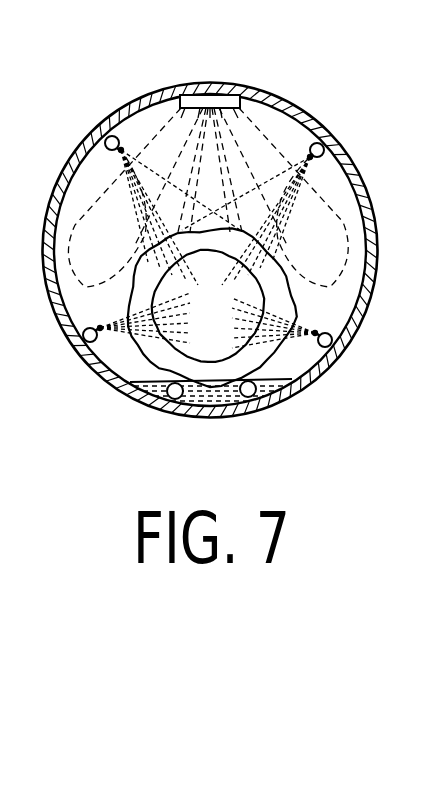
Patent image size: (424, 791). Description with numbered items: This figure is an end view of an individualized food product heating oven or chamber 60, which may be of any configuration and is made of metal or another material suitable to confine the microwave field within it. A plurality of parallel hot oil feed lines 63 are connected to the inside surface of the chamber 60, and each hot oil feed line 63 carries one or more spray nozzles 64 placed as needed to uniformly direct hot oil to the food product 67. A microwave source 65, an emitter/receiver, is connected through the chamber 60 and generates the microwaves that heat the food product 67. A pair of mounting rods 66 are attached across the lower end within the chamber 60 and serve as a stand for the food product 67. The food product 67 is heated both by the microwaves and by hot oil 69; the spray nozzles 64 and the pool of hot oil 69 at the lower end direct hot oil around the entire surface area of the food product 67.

The heating chamber 60 is at (303, 103).
The hot oil feed line 63 is at (323, 148).
The spray nozzle 64 is at (107, 156).
The microwave source 65 is at (217, 100).
The mounting rods 66 is at (153, 384).
The food product 67 is at (234, 313).
The hot oil 69 is at (208, 392).